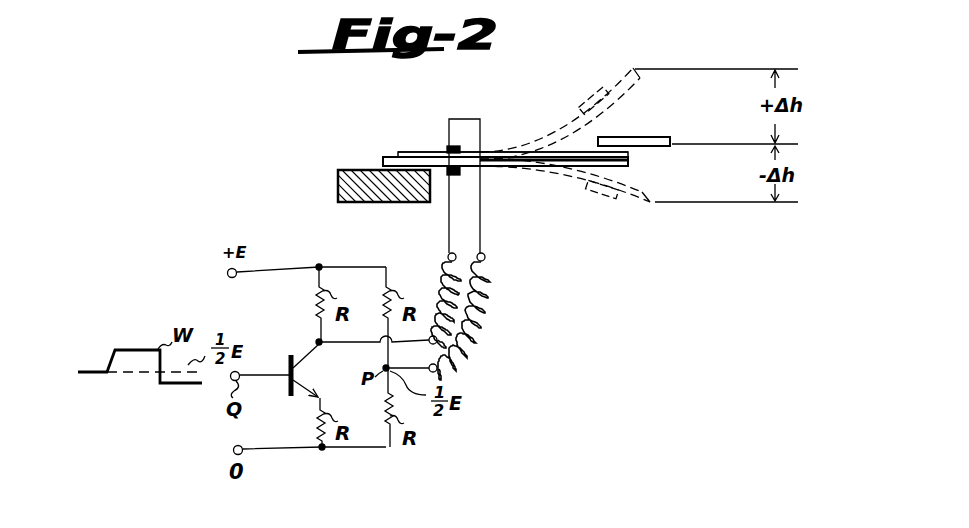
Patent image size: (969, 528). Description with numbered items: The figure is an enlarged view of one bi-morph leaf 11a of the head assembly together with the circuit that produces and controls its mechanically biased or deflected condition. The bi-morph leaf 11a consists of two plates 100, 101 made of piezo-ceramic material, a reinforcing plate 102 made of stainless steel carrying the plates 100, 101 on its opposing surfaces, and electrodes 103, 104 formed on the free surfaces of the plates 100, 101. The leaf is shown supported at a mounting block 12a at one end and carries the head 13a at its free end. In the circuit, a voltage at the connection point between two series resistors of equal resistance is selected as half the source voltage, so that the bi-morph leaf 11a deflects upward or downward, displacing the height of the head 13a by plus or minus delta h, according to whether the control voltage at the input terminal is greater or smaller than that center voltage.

The bi-morph leaf 11a is at (521, 103).
The support base 12a is at (350, 170).
The head 13a is at (652, 134).
The plate 100 is at (430, 151).
The plate 101 is at (439, 169).
The reinforcing plate 102 is at (400, 158).
The electrode 103 is at (445, 148).
The electrode 104 is at (461, 176).